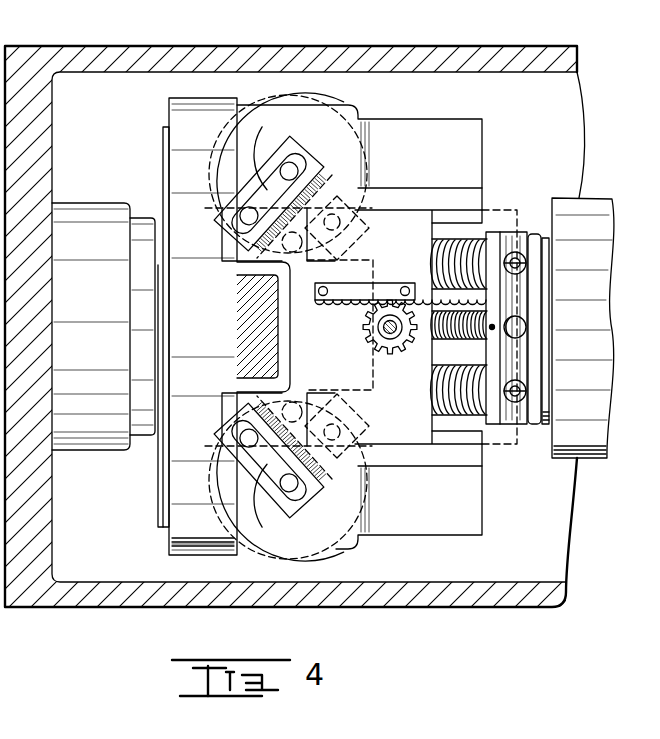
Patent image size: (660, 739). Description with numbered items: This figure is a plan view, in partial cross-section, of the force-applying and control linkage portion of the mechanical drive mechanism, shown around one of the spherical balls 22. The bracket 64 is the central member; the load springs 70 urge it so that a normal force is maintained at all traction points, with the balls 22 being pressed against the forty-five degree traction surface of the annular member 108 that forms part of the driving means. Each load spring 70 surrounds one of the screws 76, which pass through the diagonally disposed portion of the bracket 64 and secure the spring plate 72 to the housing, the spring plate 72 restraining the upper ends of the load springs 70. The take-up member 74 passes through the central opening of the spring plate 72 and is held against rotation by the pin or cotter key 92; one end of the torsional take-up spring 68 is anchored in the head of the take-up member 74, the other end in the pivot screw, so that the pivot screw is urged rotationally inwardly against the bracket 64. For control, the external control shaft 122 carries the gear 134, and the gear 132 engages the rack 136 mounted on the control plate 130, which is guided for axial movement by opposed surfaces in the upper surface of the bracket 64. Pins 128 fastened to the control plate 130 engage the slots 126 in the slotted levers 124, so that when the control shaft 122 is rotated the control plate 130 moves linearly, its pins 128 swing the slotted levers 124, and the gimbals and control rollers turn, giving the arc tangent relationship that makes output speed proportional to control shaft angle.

The spherical balls 22 is at (326, 95).
The bracket 64 is at (403, 118).
The torsional take-up spring 68 is at (445, 347).
The load springs 70 is at (441, 258).
The spring plate 72 is at (507, 228).
The take-up member 74 is at (527, 327).
The screws 76 is at (527, 265).
The pin or cotter key 92 is at (494, 325).
The annular member 108 is at (163, 527).
The external control shaft 122 is at (381, 331).
The slotted levers 124 is at (297, 143).
The slots 126 is at (272, 178).
The pins 128 is at (243, 231).
The control plate 130 is at (342, 367).
The gear 132 is at (385, 214).
The gear 134 is at (384, 351).
The rack 136 is at (364, 290).